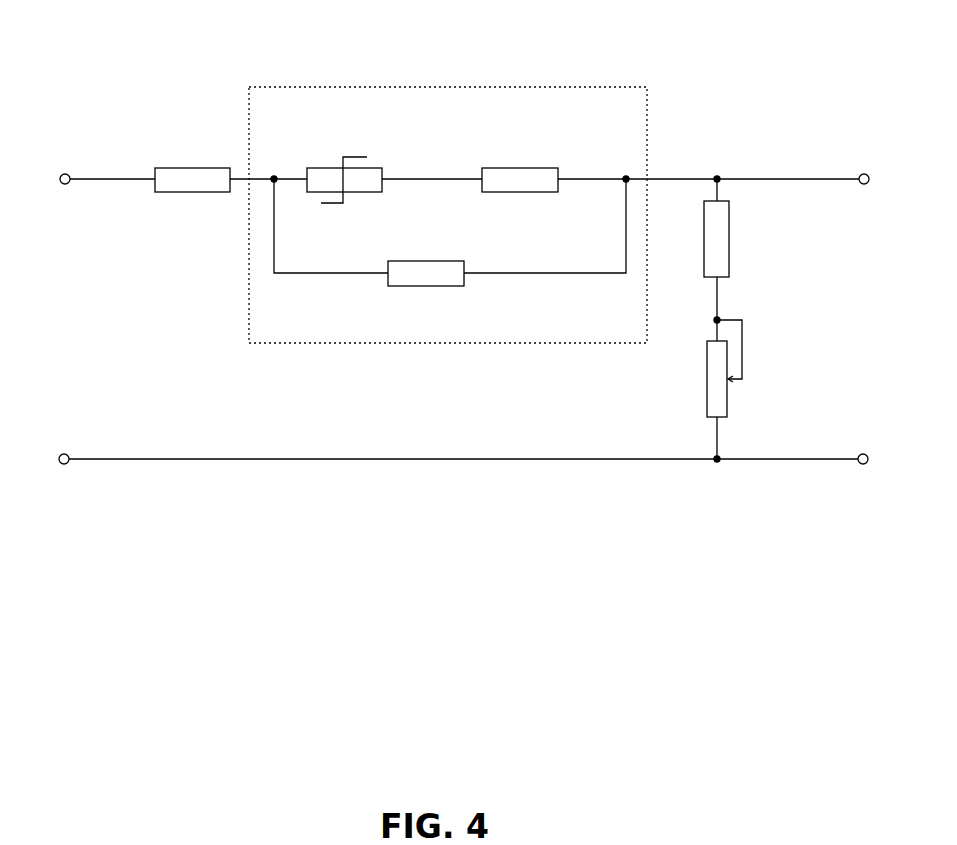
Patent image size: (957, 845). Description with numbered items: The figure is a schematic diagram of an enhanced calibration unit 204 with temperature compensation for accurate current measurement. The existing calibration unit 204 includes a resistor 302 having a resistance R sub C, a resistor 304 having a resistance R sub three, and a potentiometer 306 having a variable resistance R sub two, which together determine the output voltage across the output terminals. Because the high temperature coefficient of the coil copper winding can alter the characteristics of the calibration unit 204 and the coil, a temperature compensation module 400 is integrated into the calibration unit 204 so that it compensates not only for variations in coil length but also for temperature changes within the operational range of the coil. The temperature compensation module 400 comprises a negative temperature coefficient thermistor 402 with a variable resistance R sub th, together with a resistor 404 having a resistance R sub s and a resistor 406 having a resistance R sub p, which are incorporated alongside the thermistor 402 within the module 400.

The calibration unit 204 is at (462, 25).
The resistor 302 is at (192, 183).
The resistor 304 is at (710, 239).
The potentiometer 306 is at (721, 368).
The temperature compensation module 400 is at (448, 232).
The negative temperature coefficient (NTC) thermistor 402 is at (350, 178).
The resistor 404 is at (520, 184).
The resistor 406 is at (426, 273).